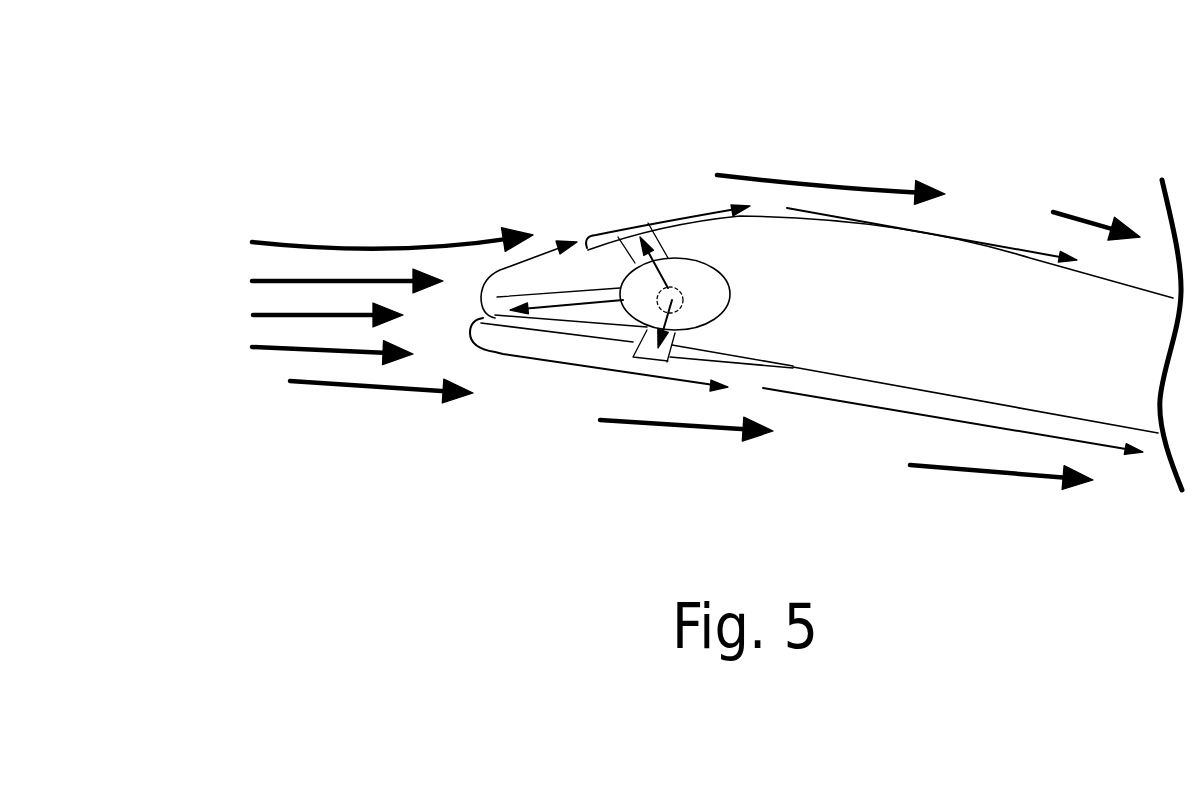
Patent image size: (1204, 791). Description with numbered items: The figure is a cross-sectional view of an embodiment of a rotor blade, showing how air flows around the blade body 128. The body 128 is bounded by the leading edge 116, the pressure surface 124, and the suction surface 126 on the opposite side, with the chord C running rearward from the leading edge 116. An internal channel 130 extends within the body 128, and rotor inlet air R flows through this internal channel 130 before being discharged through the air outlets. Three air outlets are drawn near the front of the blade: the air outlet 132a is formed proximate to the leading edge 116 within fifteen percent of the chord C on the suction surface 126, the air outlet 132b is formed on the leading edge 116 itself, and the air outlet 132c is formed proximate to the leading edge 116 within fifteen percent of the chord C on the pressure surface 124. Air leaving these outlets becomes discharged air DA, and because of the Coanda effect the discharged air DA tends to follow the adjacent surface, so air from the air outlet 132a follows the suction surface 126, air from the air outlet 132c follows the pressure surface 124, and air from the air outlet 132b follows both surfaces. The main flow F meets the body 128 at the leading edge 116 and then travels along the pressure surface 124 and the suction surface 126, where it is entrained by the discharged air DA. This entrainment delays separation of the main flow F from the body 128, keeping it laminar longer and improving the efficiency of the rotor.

The leading edge 116 is at (477, 315).
The pressure surface 124 is at (770, 218).
The suction surface 126 is at (863, 380).
The body 128 is at (945, 307).
The internal channel 130 is at (681, 290).
The air outlet 132a is at (648, 350).
The air outlet 132b is at (495, 313).
The air outlet 132c is at (645, 222).
The main flow F is at (375, 315).
The discharged air DA is at (617, 230).
The rotor inlet air R is at (683, 303).
The chord C is at (790, 365).